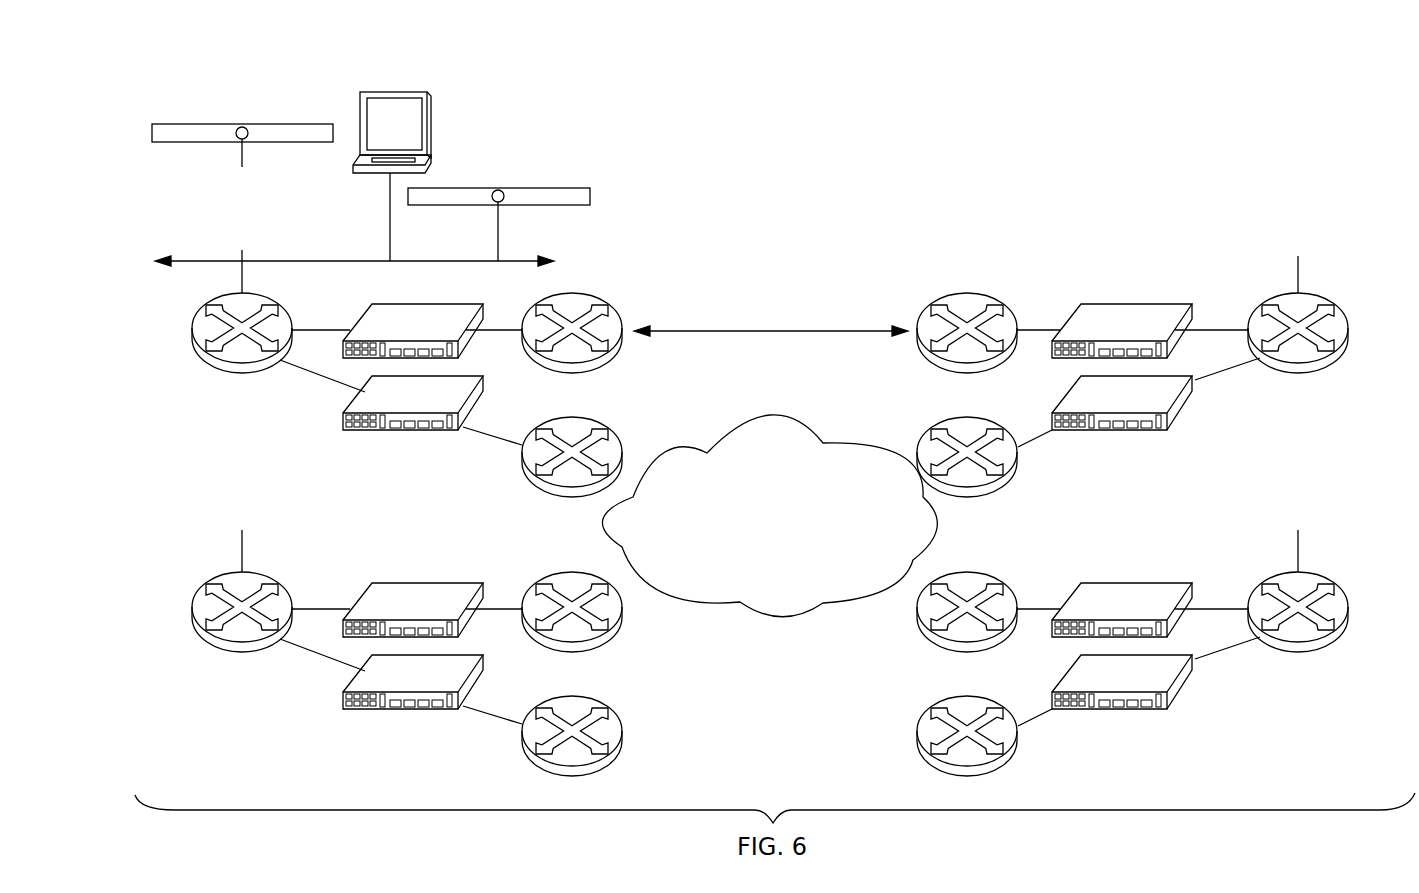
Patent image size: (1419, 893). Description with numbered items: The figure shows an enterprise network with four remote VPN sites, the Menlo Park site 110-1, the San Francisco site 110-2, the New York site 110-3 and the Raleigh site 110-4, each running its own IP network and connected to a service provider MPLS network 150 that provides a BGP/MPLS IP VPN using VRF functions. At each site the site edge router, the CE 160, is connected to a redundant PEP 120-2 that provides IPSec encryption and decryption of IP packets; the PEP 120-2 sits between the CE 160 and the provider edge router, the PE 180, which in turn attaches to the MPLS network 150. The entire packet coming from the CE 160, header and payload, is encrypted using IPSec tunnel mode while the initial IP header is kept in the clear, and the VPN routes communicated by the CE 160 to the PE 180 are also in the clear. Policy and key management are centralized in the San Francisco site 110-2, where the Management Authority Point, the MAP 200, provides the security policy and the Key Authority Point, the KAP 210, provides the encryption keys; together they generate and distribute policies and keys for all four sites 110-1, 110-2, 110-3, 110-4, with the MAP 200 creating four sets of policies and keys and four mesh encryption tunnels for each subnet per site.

The Menlo Park site 110-1 is at (215, 529).
The San Francisco site 110-2 is at (215, 249).
The New York site 110-3 is at (1271, 252).
The Raleigh site 110-4 is at (1271, 529).
The redundant PEP 120-2 is at (408, 303).
The service provider MPLS network 150 is at (753, 574).
The CE 160 is at (192, 320).
The PE 180 is at (533, 312).
The Management Authority Point (MAP) 200 is at (432, 137).
The Key Authority Point (KAP) 210 is at (563, 155).